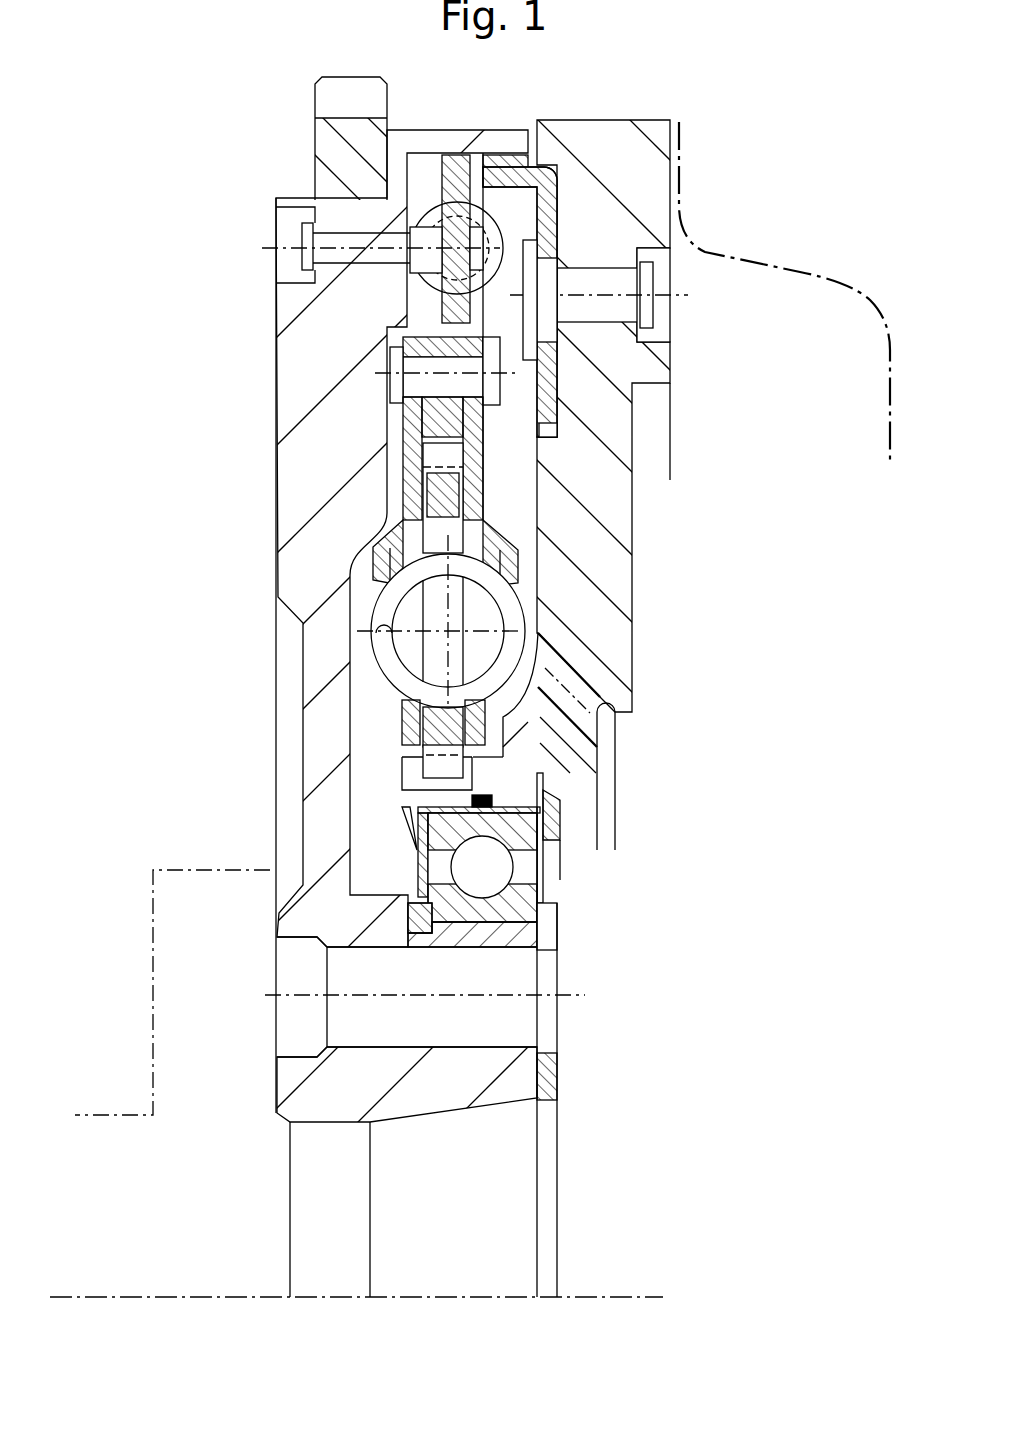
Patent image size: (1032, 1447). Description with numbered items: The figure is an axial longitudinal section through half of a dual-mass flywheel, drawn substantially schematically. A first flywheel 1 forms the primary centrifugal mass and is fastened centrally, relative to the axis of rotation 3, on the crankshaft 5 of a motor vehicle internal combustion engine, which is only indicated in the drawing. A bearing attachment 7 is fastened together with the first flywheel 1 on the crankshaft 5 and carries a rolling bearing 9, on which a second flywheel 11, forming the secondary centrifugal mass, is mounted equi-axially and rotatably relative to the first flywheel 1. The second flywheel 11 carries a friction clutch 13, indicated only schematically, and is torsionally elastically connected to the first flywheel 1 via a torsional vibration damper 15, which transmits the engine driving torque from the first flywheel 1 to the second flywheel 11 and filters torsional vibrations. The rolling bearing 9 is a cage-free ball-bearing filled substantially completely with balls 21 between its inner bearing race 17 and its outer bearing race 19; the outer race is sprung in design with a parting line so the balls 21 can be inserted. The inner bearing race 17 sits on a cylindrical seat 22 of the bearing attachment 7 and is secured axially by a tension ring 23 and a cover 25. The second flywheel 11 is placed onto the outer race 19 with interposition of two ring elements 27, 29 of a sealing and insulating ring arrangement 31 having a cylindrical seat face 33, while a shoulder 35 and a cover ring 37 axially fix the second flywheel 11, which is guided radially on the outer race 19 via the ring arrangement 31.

The first flywheel 1 is at (298, 323).
The axis of rotation 3 is at (623, 1297).
The crankshaft 5 is at (155, 868).
The bearing attachment 7 is at (503, 1097).
The rolling bearing 9 is at (536, 870).
The second flywheel 11 is at (658, 187).
The friction clutch 13 is at (807, 273).
The torsional vibration damper 15 is at (364, 592).
The inner bearing race 17 is at (525, 893).
The outer bearing race 19 is at (562, 833).
The balls 21 is at (473, 880).
The cylindrical seat 22 is at (500, 928).
The tension ring 23 is at (410, 908).
The cover 25 is at (545, 928).
The ring element 27 is at (413, 865).
The ring element 29 is at (560, 856).
The sealing and insulating ring arrangement 31 is at (497, 786).
The seat face 33 is at (509, 800).
The shoulder 35 is at (407, 830).
The cover ring 37 is at (562, 797).